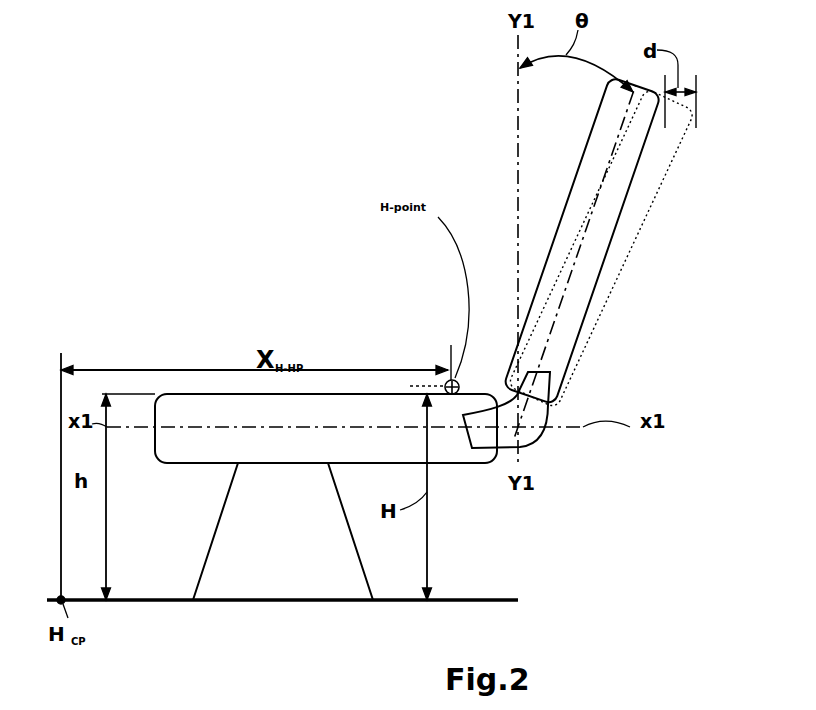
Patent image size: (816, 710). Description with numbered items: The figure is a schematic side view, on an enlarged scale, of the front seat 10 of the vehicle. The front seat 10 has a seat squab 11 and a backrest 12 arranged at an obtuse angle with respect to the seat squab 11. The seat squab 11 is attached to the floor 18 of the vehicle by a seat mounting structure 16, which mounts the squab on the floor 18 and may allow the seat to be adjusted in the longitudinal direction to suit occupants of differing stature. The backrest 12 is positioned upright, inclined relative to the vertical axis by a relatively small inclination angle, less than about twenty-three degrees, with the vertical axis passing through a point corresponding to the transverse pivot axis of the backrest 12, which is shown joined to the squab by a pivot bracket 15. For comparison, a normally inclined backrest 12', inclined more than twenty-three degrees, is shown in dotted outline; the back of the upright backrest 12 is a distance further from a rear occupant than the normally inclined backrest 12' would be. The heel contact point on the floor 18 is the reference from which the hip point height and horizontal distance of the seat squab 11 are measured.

The front seat 10 is at (403, 391).
The seat squab 11 is at (273, 393).
The backrest 12 is at (619, 241).
The normally inclined backrest 12' is at (625, 248).
The hinge bracket / recliner 15 is at (543, 420).
The seat mounting structure 16 is at (215, 527).
The floor 18 is at (500, 598).